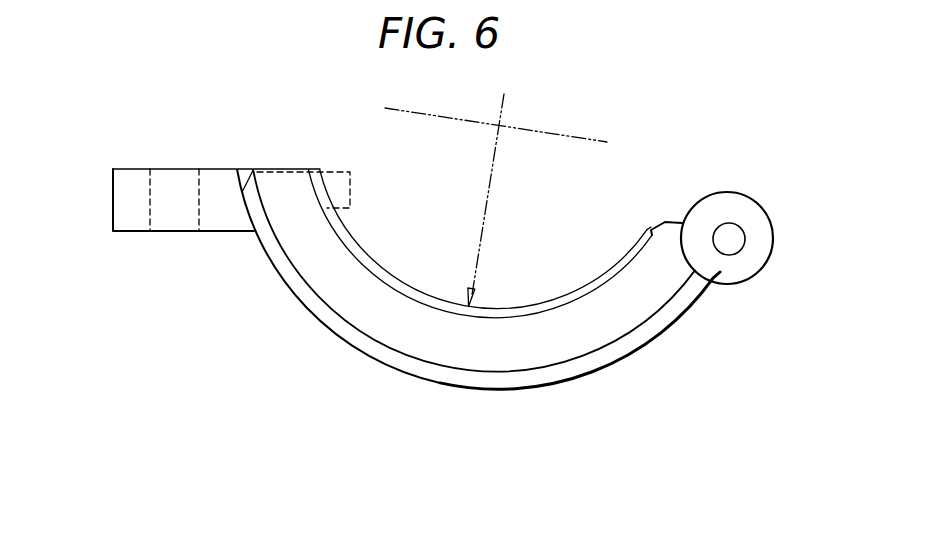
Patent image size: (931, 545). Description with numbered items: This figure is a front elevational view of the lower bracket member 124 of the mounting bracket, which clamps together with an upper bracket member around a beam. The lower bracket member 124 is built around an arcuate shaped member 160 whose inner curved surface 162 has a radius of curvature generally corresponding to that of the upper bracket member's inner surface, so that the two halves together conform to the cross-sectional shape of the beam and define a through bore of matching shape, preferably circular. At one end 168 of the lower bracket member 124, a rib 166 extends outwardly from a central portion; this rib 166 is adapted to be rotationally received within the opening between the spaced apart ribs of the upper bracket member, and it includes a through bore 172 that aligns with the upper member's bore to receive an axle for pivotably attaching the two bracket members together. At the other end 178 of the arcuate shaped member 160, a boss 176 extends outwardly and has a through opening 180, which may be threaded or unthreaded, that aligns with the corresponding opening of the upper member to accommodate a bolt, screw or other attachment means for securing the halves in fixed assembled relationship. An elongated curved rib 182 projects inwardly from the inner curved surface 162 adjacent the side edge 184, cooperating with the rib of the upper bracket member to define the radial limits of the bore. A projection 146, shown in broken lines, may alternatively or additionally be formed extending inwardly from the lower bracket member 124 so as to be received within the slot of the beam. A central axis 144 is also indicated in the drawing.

The lower bracket member 124 is at (633, 352).
The pivot axis 144 is at (487, 210).
The projection 146 is at (367, 177).
The arcuate shaped member 160 is at (289, 287).
The inner curved surface 162 is at (325, 168).
The rib 166 is at (763, 210).
The one end 168 is at (663, 221).
The through bore 172 is at (730, 247).
The boss 176 is at (113, 207).
The other end 178 is at (262, 168).
The through opening 180 is at (168, 167).
The elongated curved rib 182 is at (358, 260).
The side edge 184 is at (405, 295).